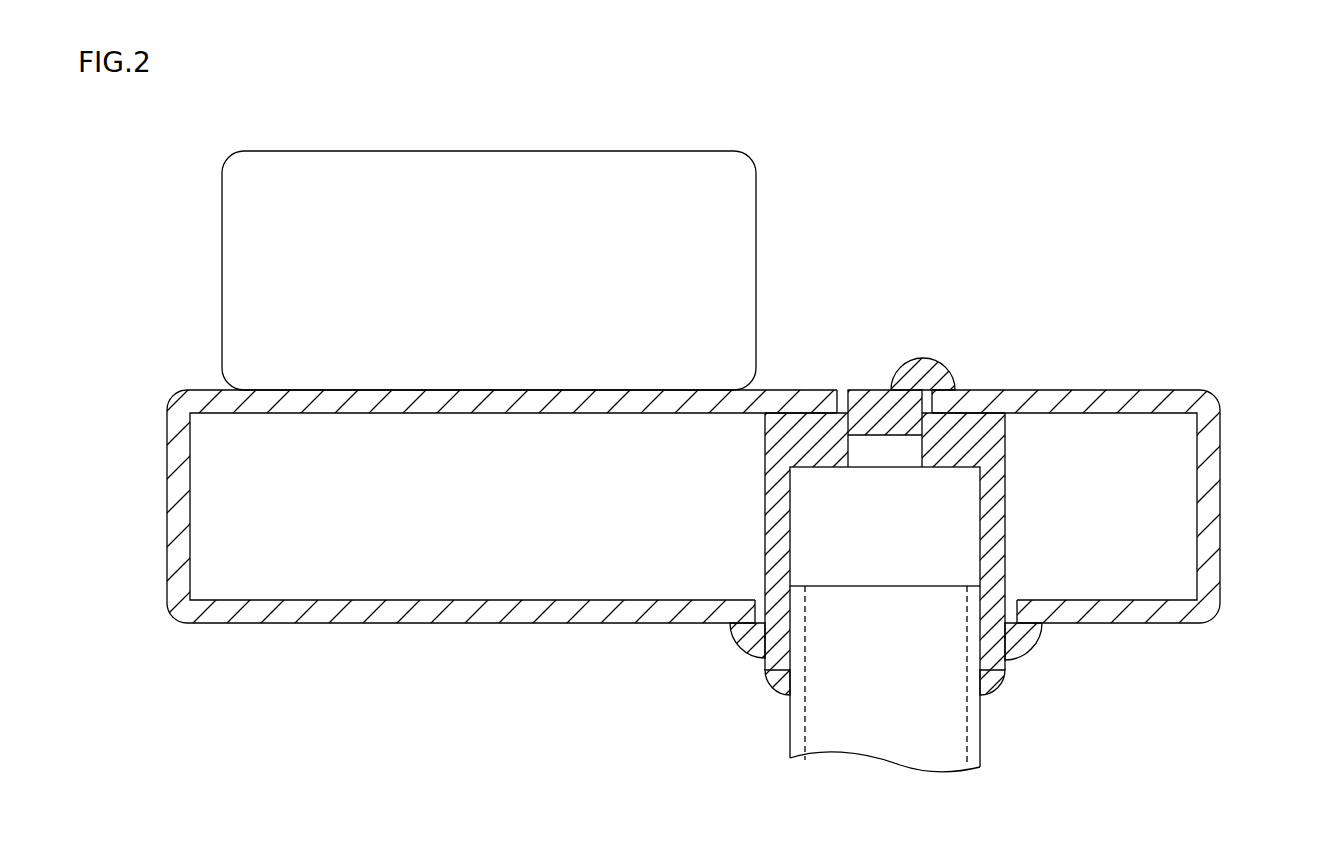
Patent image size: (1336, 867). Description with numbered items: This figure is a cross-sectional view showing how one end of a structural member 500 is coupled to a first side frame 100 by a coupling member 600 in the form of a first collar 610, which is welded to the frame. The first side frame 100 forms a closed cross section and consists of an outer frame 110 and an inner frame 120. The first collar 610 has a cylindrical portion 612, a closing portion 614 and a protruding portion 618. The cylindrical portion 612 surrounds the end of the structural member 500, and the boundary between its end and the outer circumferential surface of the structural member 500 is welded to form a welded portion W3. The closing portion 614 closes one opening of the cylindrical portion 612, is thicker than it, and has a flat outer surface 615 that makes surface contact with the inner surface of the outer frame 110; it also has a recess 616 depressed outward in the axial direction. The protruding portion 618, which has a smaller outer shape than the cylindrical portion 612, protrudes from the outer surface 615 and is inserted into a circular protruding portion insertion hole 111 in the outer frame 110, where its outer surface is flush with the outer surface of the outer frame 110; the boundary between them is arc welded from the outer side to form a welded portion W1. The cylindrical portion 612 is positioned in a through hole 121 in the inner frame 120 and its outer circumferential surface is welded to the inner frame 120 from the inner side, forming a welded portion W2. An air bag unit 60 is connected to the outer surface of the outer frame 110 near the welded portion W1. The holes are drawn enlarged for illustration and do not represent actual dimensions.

The air bag unit 60 is at (778, 235).
The first side frame 100 is at (747, 506).
The outer frame 110 is at (1158, 407).
The protruding portion insertion hole 111 is at (928, 408).
The inner frame 120 is at (1163, 608).
The through hole 121 is at (1017, 628).
The structural member 500 is at (774, 742).
The fixing structure 600 is at (911, 477).
The first collar 610 is at (911, 477).
The cylindrical portion 612 is at (777, 493).
The closing portion 614 is at (805, 423).
The outer surface 615 is at (967, 408).
The recess 616 is at (887, 440).
The protruding portion 618 is at (873, 398).
The welded portion W1 is at (919, 368).
The welded portion W2 is at (1022, 652).
The welded portion W3 is at (993, 700).